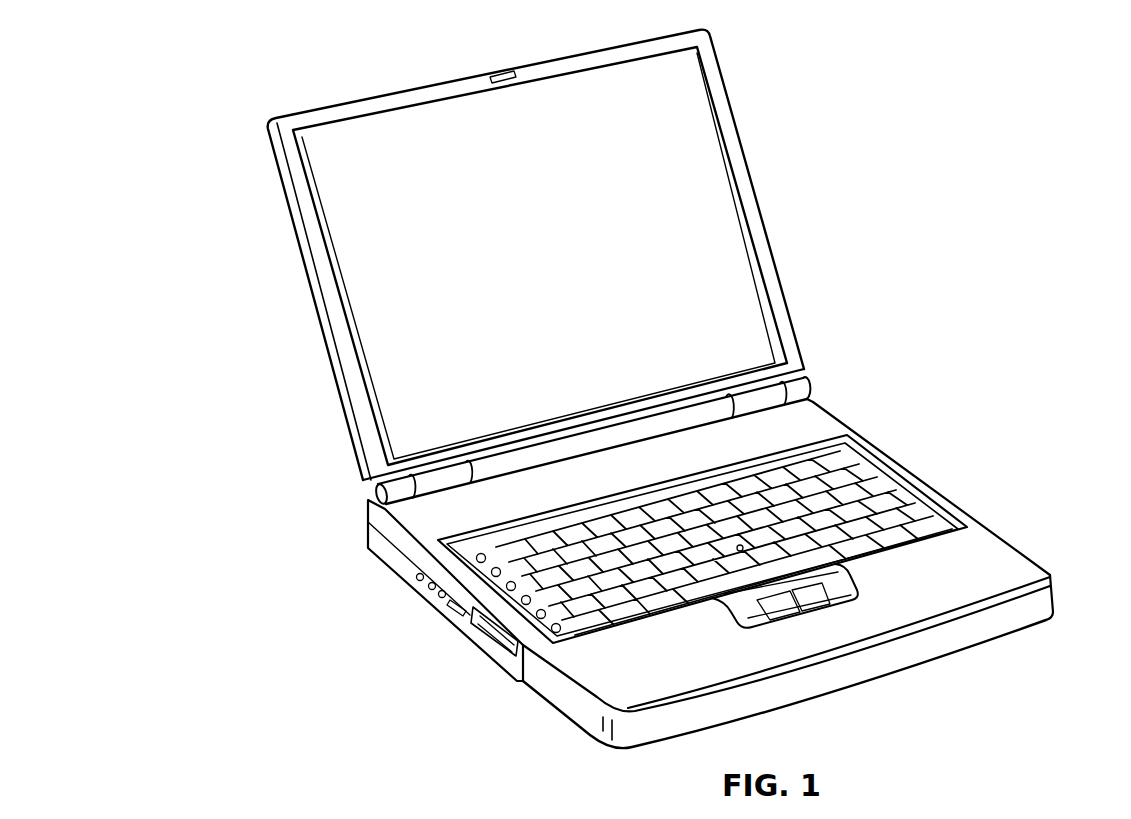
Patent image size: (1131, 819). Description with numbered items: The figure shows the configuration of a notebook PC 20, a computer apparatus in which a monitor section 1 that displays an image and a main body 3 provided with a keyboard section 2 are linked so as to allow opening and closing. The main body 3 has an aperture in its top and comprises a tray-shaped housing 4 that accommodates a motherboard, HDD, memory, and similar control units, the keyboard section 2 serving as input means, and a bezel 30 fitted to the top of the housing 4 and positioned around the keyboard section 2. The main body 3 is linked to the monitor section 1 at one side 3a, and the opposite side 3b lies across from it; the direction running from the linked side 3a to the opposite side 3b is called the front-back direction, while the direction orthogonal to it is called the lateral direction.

The notebook PC 20 is at (892, 200).
The monitor section 1 is at (685, 108).
The keyboard section 2 is at (900, 497).
The main body 3 is at (995, 552).
The side on which the main body is linked to the monitor section 3a is at (815, 410).
The side opposite 3b is at (1030, 576).
The bezel 30 is at (582, 667).
The tray-shaped housing 4 is at (587, 712).